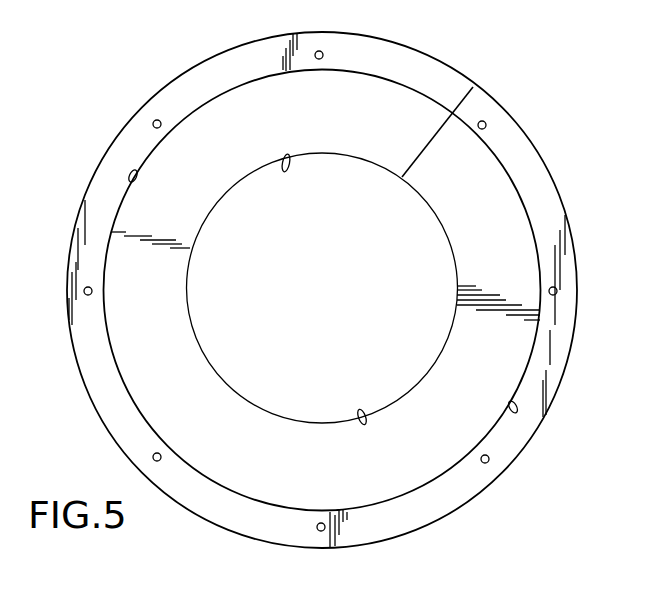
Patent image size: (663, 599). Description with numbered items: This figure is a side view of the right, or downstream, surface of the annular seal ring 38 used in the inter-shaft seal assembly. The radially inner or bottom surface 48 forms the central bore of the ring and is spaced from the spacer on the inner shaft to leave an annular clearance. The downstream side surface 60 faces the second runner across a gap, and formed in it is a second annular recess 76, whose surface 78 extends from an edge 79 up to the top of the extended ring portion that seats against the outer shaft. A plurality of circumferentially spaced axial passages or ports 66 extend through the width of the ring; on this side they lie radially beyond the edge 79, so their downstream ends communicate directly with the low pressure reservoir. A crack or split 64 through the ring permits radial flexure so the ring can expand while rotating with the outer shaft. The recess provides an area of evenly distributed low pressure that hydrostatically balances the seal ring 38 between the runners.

The seal ring 38 is at (572, 181).
The radially inner or bottom surface 48 is at (287, 155).
The right or downstream side surface 60 is at (493, 217).
The crack or split 64 is at (436, 134).
The axial passages or ports 66 is at (155, 120).
The second annular recess 76 is at (458, 83).
The surface of second annular recess 78 is at (427, 79).
The edge of second annular recess 79 is at (131, 182).